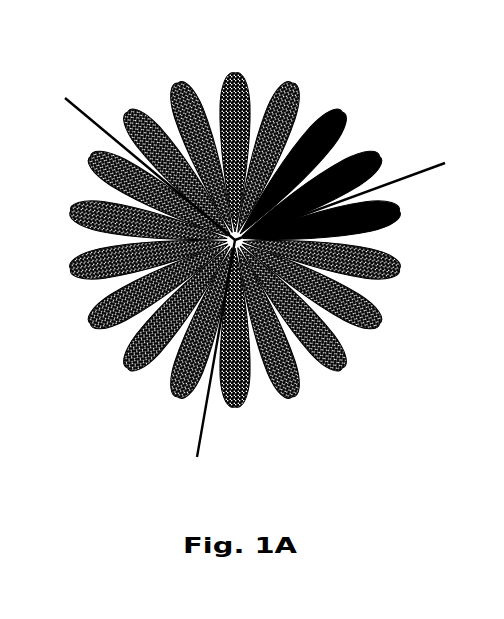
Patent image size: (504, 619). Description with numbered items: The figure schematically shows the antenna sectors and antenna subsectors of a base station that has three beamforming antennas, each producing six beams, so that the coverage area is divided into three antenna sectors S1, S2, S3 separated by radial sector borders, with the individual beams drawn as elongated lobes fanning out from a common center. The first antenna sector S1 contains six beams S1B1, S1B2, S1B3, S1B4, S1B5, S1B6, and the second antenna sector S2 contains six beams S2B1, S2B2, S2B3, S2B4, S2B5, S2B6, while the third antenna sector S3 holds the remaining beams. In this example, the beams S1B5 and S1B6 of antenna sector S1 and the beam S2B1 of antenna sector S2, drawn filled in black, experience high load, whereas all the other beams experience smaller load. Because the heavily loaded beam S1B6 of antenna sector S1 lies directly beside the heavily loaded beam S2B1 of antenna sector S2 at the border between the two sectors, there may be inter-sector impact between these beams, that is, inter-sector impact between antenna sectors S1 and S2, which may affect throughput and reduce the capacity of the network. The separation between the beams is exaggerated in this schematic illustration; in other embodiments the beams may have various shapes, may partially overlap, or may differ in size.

The antenna sector S1 is at (196, 123).
The antenna sector S2 is at (340, 295).
The antenna sector S3 is at (146, 300).
The antenna subsector beam S1B1 is at (164, 166).
The antenna subsector beam S1B2 is at (191, 149).
The antenna subsector beam S1B3 is at (237, 142).
The antenna subsector beam S1B4 is at (288, 153).
The antenna subsector beam S1B5 is at (318, 173).
The antenna subsector beam S1B6 is at (337, 194).
The antenna subsector beam S2B1 is at (350, 224).
The antenna subsector beam S2B2 is at (349, 259).
The antenna subsector beam S2B3 is at (336, 289).
The antenna subsector beam S2B4 is at (313, 314).
The antenna subsector beam S2B5 is at (280, 332).
The antenna subsector beam S2B6 is at (239, 345).